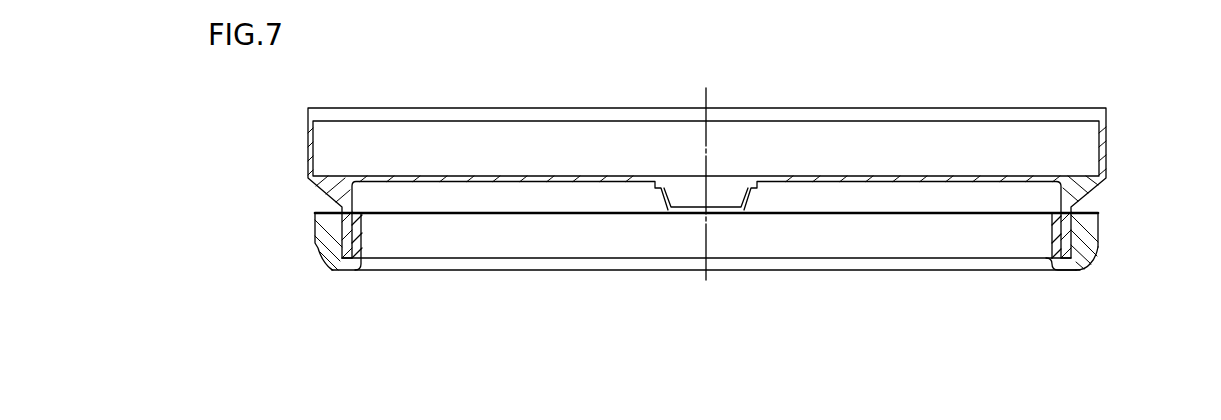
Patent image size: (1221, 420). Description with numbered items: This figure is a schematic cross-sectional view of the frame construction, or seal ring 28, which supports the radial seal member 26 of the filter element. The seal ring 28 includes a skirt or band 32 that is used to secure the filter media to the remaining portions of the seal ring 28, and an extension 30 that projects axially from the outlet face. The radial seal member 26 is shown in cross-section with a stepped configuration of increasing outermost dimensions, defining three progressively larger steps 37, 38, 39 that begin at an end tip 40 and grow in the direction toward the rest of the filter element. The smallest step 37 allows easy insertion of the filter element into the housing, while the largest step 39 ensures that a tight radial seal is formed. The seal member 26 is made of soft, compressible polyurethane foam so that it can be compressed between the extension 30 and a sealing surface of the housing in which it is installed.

The radial seal member 26 is at (688, 247).
The seal ring 28 is at (760, 145).
The extension 30 is at (1065, 228).
The skirt 32 is at (1127, 94).
The smallest step 37 is at (1090, 260).
The step 38 is at (1093, 255).
The largest step 39 is at (1097, 227).
The end tip 40 is at (1073, 270).